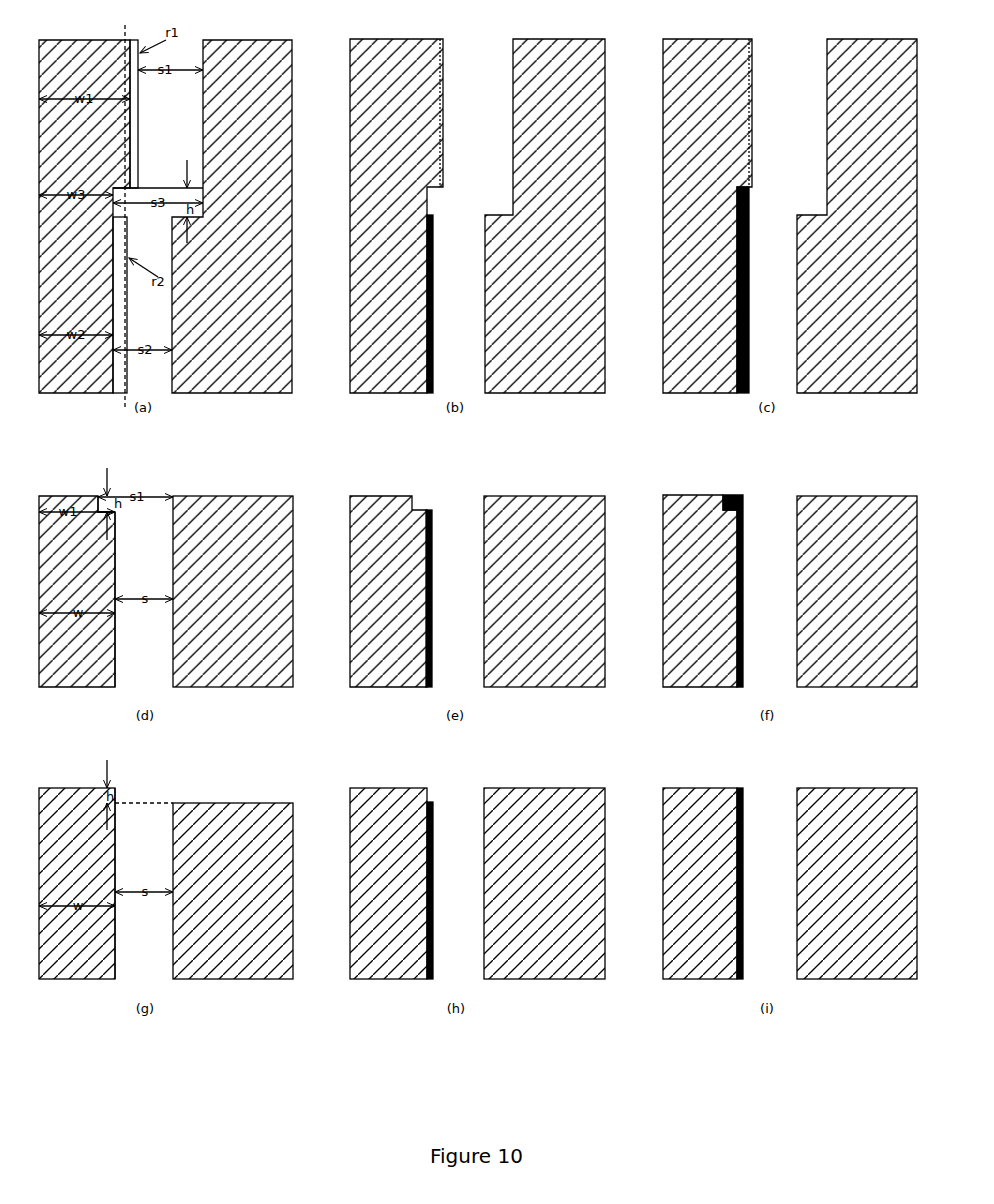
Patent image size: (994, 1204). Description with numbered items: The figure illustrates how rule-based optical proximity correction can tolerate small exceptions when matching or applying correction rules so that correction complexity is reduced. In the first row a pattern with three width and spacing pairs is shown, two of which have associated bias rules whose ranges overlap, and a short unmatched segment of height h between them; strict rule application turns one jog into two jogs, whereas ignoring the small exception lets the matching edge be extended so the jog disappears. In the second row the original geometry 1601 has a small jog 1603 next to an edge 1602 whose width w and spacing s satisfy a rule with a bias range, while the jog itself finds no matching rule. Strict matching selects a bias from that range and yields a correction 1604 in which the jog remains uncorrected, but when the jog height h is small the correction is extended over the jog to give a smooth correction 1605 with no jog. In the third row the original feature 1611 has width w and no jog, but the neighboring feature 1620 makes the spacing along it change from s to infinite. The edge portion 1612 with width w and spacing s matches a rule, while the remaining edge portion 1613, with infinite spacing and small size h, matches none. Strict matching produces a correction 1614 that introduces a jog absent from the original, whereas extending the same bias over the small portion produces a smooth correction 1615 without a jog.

The original geometry 1601 is at (77, 591).
The edge 1602 is at (116, 635).
The small jog 1603 is at (97, 503).
The correction 1604 is at (432, 510).
The correction 1605 is at (743, 510).
The original feature 1611 is at (77, 883).
The edge portion 1612 is at (116, 927).
The remaining edge portion 1613 is at (114, 800).
The correction 1614 is at (431, 802).
The correction 1615 is at (743, 800).
The neighboring feature 1620 is at (233, 891).